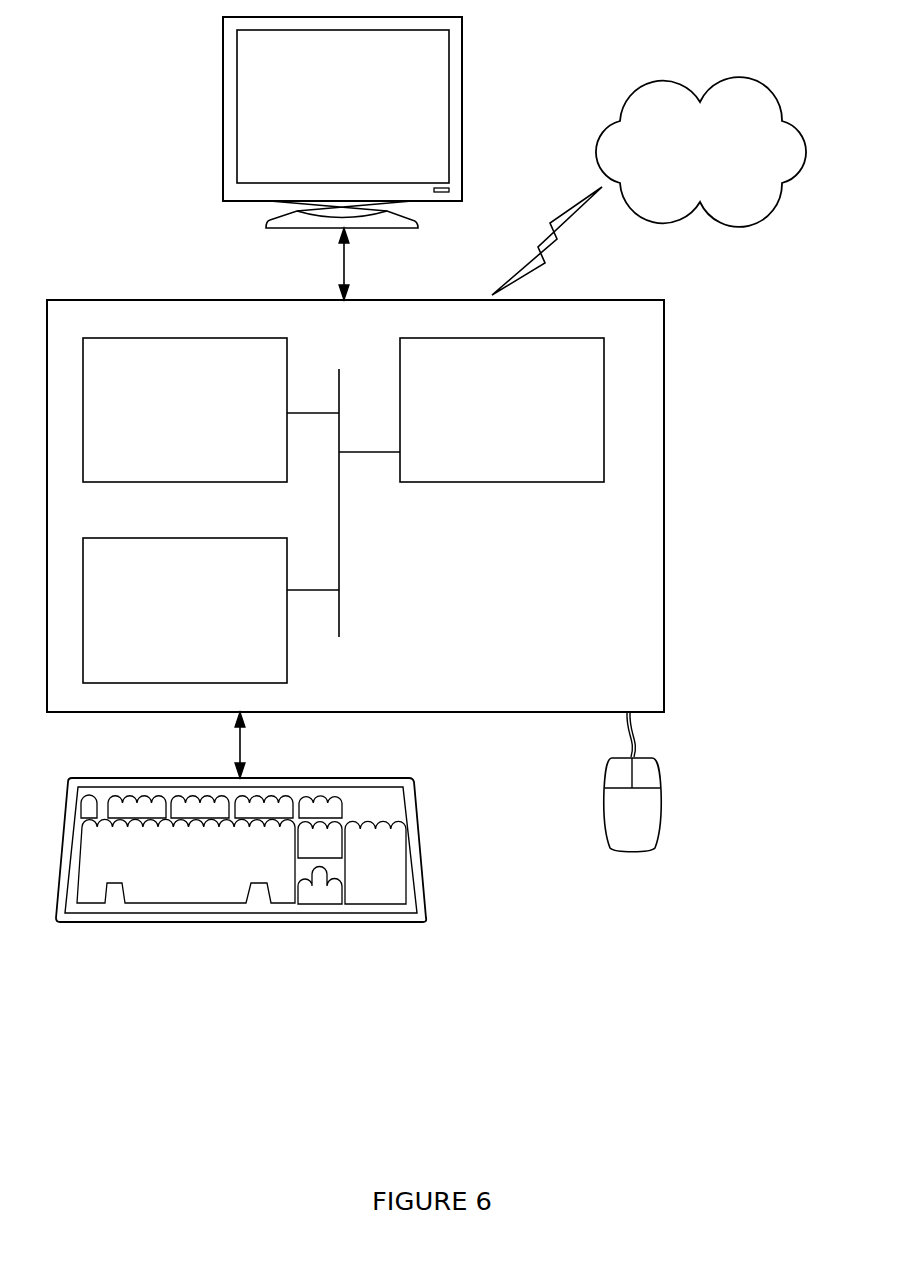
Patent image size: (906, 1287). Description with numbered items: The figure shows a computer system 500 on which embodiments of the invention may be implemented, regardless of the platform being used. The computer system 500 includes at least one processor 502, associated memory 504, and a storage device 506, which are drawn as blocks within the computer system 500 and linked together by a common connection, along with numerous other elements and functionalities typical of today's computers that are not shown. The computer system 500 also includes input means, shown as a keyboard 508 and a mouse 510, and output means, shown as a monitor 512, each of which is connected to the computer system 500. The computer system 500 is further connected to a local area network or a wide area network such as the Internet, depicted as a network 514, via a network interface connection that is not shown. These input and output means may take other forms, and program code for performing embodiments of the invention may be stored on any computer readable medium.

The computer system 500 is at (720, 301).
The processor 502 is at (536, 424).
The memory 504 is at (205, 424).
The storage device 506 is at (201, 624).
The keyboard 508 is at (198, 887).
The mouse 510 is at (650, 826).
The monitor 512 is at (363, 131).
The network 514 is at (720, 167).